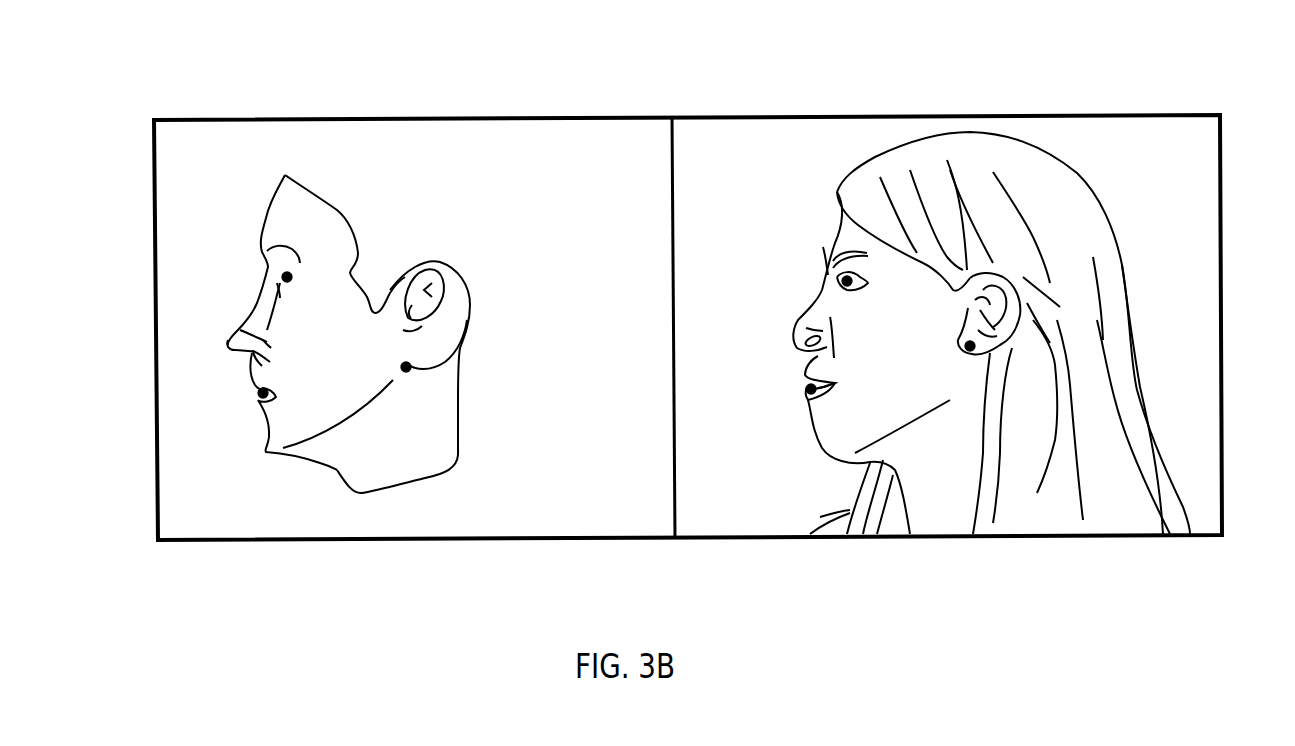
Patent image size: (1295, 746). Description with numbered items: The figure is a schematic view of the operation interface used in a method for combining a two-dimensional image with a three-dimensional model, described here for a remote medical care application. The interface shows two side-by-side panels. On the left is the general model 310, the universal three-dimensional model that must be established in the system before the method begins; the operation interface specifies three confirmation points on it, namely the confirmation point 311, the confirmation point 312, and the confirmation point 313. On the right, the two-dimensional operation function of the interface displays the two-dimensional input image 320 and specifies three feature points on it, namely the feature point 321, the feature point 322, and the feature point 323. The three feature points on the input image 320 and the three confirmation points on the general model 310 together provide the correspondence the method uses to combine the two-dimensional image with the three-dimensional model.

The general model 310 is at (155, 172).
The confirmation point 311 is at (287, 277).
The confirmation point 312 is at (263, 393).
The confirmation point 313 is at (406, 367).
The 2D input image 320 is at (1158, 115).
The feature point 321 is at (847, 281).
The feature point 322 is at (811, 389).
The feature point 323 is at (970, 346).